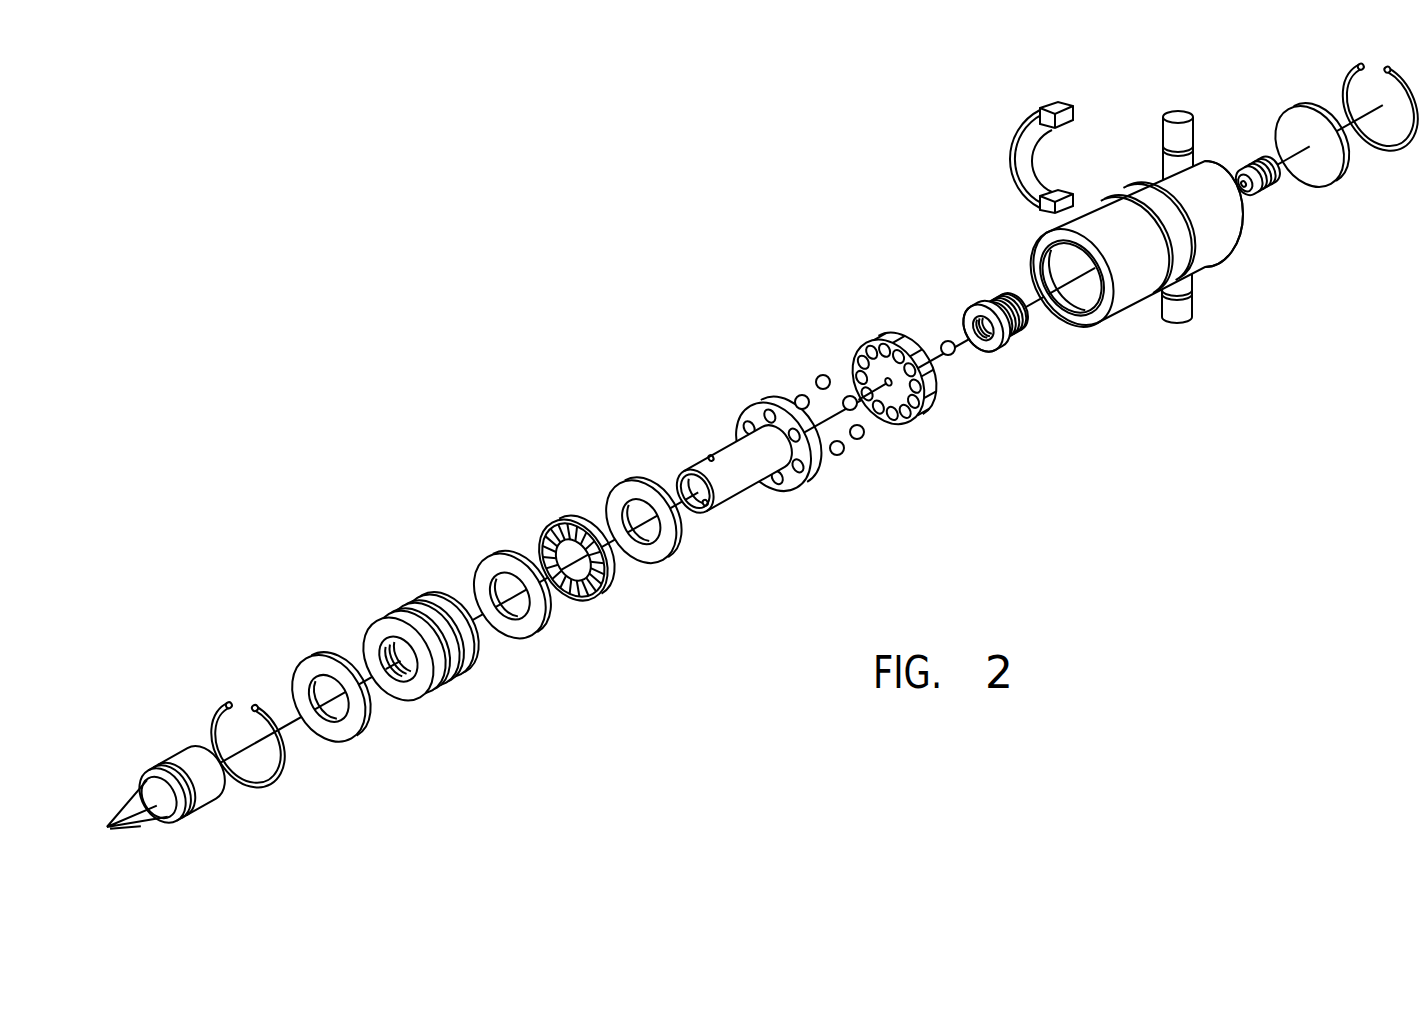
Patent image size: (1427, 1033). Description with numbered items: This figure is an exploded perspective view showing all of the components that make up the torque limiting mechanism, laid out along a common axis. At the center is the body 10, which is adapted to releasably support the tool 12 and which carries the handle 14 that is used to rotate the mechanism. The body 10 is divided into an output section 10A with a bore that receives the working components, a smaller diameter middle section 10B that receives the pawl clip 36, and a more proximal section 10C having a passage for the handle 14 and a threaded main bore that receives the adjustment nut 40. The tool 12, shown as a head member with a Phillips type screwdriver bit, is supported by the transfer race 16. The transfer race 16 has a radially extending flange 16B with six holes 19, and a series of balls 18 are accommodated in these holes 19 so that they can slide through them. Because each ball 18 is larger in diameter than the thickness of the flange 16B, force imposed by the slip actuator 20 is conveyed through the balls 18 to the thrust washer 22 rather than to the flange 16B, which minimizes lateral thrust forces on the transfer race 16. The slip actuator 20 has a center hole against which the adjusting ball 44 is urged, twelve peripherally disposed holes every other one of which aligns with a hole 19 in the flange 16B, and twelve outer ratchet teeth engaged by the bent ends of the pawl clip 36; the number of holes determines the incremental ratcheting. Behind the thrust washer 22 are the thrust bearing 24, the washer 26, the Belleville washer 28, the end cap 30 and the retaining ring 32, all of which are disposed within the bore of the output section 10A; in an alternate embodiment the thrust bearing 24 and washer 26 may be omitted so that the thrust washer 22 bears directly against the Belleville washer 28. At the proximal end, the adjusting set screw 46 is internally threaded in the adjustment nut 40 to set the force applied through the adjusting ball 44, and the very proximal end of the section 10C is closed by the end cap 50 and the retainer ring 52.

The body 10 is at (1136, 176).
The output section 10A is at (1113, 298).
The middle section 10B is at (1160, 243).
The proximal section 10C is at (1213, 213).
The tool 12 is at (190, 815).
The handle 14 is at (1183, 300).
The transfer race 16 is at (728, 436).
The flange 16B is at (813, 470).
The balls 18 is at (821, 377).
The holes 19 is at (752, 410).
The slip actuator 20 is at (863, 339).
The thrust washer 22 is at (615, 500).
The thrust bearing 24 is at (553, 535).
The washer 26 is at (477, 577).
The Belleville washer 28 is at (437, 593).
The end cap 30 is at (297, 680).
The retaining ring 32 is at (212, 713).
The pawl clip 36 is at (1052, 106).
The adjustment nut 40 is at (967, 318).
The adjusting ball 44 is at (958, 353).
The adjusting set screw 46 is at (1256, 163).
The end cap 50 is at (1307, 120).
The retainer ring 52 is at (1388, 150).